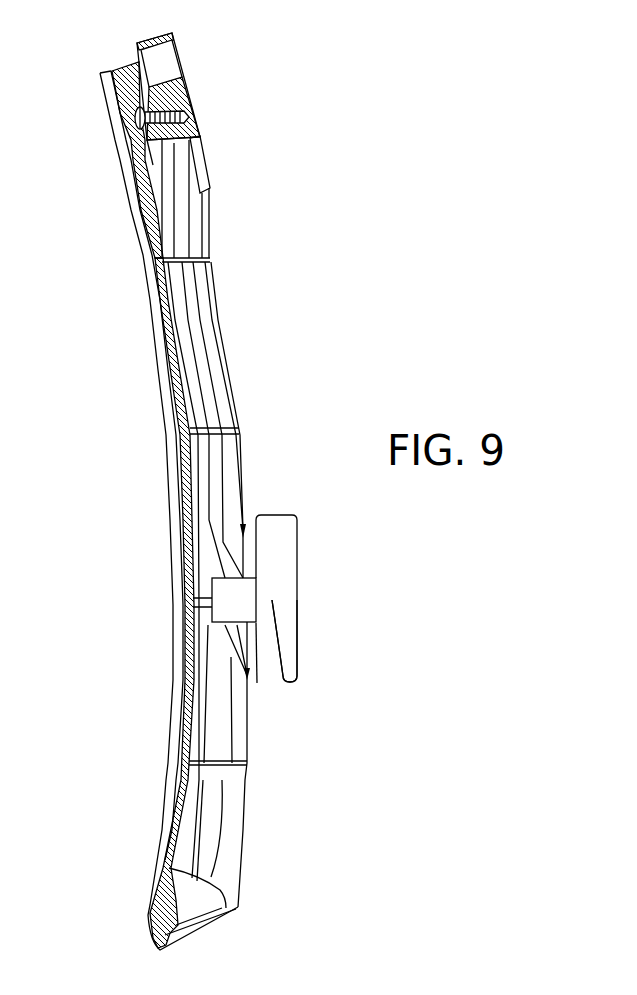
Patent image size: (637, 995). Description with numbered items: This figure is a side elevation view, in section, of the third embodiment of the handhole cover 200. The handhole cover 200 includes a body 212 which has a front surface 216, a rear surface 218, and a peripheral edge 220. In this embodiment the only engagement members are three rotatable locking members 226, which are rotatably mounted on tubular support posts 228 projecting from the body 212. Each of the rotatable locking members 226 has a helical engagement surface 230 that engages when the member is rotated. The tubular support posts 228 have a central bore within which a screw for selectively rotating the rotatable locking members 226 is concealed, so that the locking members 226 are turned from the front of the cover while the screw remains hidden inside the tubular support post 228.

The handhole cover 200 is at (347, 246).
The body 212 is at (147, 200).
The front surface 216 is at (168, 463).
The rear surface 218 is at (232, 377).
The peripheral edge 220 is at (128, 66).
The rotatable locking member 226 is at (205, 148).
The tubular support post 228 is at (243, 598).
The helical engagement surface 230 is at (267, 662).